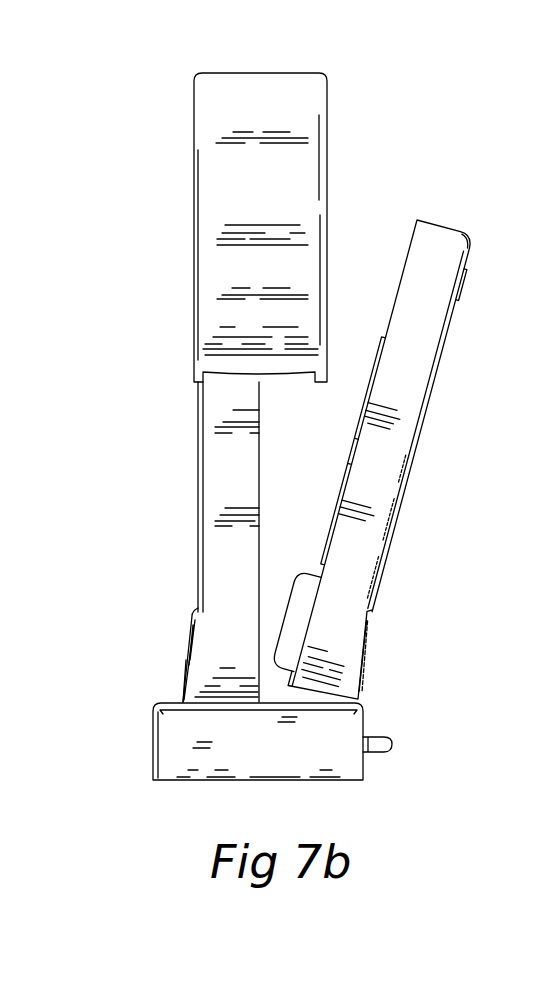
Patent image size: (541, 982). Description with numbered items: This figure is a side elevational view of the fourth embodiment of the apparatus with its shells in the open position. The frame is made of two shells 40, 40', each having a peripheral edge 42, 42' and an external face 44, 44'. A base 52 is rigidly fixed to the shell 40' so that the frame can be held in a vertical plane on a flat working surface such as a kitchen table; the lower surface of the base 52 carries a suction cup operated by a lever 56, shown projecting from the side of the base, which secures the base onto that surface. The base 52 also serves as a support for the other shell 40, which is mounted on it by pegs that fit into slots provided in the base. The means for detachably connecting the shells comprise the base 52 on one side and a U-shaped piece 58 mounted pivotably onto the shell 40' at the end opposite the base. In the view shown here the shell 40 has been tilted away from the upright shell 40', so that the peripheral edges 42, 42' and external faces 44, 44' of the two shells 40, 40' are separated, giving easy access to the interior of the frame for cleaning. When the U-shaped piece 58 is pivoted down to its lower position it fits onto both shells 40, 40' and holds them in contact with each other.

The shell 40 is at (383, 637).
The shell 40' is at (108, 655).
The peripheral edge 42 is at (414, 460).
The peripheral edge 42' is at (179, 542).
The external face 44 is at (399, 667).
The external face 44' is at (128, 672).
The base 52 is at (153, 748).
The lever 56 is at (393, 745).
The U-shaped piece 58 is at (263, 88).